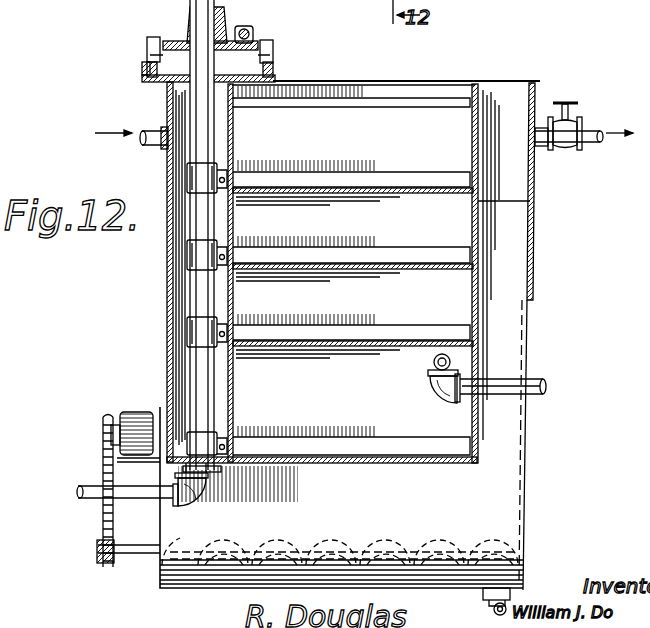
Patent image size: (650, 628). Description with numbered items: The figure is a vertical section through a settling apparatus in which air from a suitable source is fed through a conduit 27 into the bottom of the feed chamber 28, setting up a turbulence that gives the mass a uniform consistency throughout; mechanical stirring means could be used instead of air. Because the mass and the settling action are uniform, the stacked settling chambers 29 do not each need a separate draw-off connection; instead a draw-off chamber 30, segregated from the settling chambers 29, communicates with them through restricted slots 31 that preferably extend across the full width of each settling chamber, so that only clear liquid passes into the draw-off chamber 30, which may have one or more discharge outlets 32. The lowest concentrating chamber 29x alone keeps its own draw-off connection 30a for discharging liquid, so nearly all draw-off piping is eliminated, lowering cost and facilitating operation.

The conduit 27 is at (197, 497).
The feed chamber 28 is at (183, 310).
The settling chambers 29 is at (347, 212).
The bottom chamber 29x is at (245, 380).
The draw-off chamber 30 is at (512, 186).
The draw-off connection 30a is at (500, 392).
The restricted slots 31 is at (483, 116).
The discharge outlets 32 is at (585, 126).